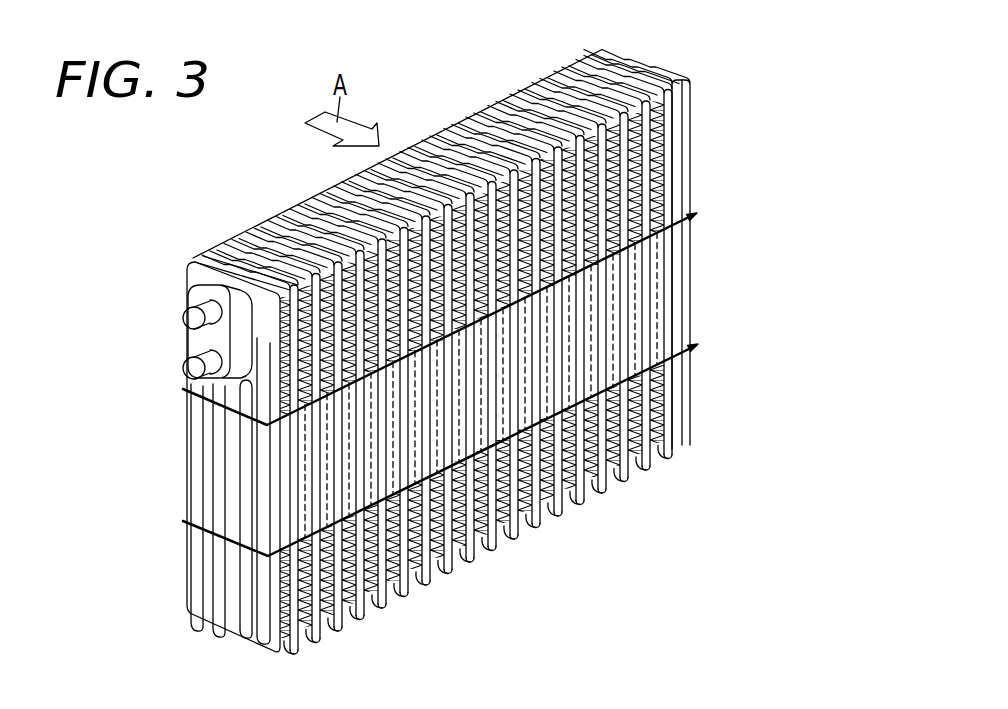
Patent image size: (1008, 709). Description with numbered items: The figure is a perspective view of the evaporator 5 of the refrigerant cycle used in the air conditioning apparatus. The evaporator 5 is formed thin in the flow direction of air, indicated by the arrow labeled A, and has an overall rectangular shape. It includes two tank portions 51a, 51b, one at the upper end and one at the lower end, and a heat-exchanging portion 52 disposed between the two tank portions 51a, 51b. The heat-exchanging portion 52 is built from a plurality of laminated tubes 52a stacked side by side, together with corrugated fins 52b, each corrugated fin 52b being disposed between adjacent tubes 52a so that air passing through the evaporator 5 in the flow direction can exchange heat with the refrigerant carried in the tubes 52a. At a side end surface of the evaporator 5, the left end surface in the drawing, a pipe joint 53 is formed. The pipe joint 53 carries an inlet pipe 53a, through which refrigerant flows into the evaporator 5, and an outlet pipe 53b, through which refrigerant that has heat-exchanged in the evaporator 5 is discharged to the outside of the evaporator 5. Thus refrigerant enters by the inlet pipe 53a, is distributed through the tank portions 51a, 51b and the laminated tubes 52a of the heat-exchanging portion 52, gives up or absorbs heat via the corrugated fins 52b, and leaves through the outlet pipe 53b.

The evaporator 5 is at (696, 138).
The tank portion 51a is at (533, 90).
The tank portion 51b is at (641, 462).
The heat-exchanging portion 52 is at (660, 298).
The laminated tubes 52a is at (665, 262).
The corrugated fins 52b is at (683, 372).
The pipe joint 53 is at (200, 340).
The inlet pipe 53a is at (185, 368).
The outlet pipe 53b is at (185, 319).